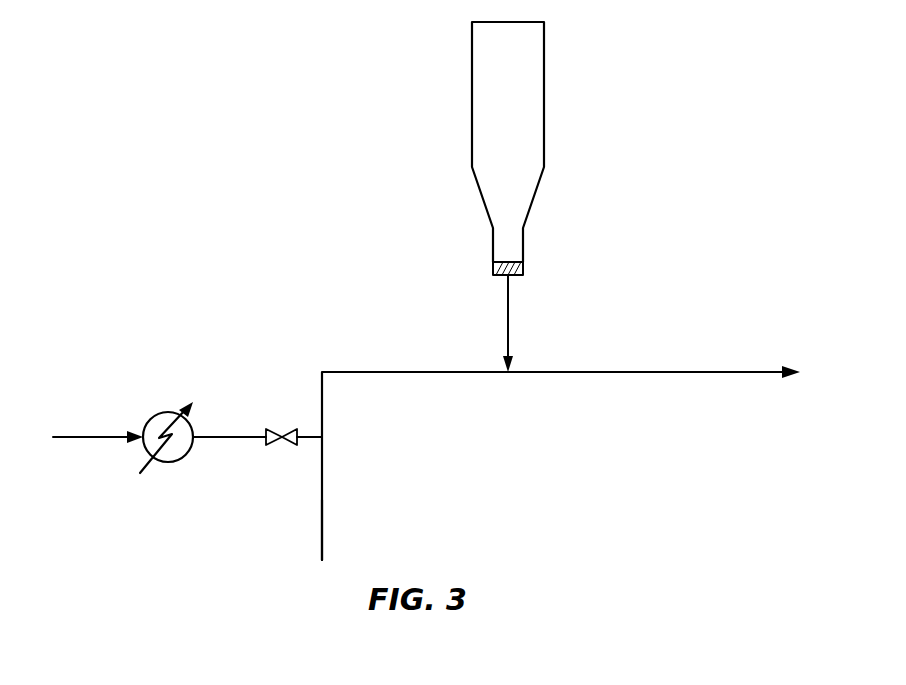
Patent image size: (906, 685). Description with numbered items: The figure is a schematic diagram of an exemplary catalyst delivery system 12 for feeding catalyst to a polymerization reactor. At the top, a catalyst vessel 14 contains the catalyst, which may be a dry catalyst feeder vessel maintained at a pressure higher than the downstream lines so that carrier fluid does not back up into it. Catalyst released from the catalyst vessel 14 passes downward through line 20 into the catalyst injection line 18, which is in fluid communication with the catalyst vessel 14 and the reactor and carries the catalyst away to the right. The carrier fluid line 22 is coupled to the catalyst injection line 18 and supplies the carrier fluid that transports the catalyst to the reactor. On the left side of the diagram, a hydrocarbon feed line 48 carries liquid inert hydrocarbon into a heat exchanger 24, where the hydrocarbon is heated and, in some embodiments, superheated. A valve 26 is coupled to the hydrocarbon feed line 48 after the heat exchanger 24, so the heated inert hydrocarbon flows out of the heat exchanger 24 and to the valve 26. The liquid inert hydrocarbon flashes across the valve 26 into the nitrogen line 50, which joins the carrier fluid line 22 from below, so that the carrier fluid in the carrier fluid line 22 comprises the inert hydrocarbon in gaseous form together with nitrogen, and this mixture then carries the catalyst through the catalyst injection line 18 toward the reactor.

The catalyst delivery system 12 is at (261, 141).
The catalyst vessel 14 is at (544, 93).
The catalyst injection line 18 is at (673, 372).
The line 20 is at (508, 322).
The carrier fluid line 22 is at (428, 371).
The heat exchanger 24 is at (160, 413).
The valve 26 is at (275, 430).
The hydrocarbon feed line 48 is at (92, 439).
The nitrogen line 50 is at (322, 510).